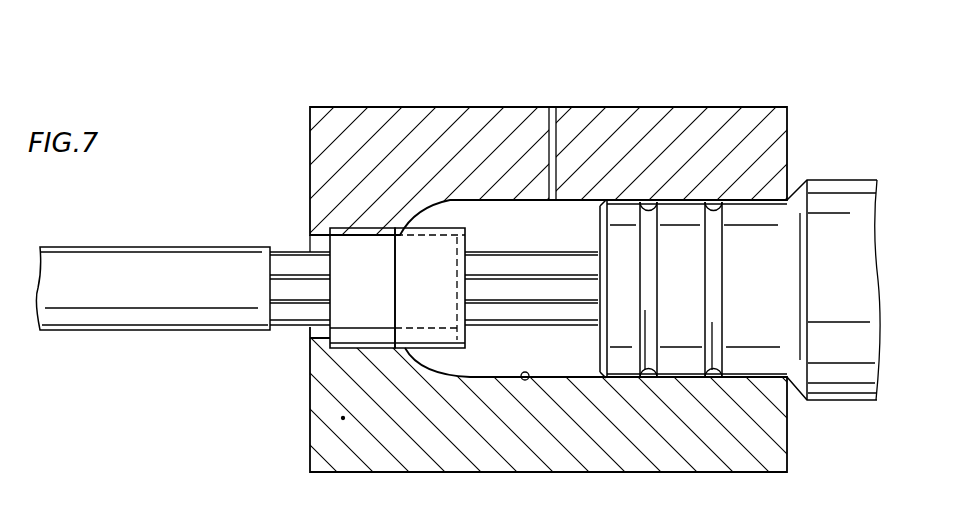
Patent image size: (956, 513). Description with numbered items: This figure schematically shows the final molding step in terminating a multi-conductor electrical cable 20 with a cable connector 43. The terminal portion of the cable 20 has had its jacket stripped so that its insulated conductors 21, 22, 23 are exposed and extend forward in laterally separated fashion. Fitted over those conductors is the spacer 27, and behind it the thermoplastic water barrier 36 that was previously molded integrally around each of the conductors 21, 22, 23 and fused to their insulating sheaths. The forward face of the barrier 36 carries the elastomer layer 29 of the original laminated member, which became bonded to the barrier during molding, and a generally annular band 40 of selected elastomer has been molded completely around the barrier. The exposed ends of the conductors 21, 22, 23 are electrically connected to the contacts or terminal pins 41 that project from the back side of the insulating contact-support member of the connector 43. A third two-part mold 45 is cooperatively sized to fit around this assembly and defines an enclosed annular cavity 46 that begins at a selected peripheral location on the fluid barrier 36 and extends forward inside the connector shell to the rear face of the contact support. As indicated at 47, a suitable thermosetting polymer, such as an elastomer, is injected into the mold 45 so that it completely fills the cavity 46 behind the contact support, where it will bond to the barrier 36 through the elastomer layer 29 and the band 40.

The multi-conductor electrical cable 20 is at (231, 247).
The electrical conductor 21 is at (577, 313).
The electrical conductor 22 is at (548, 290).
The electrical conductor 23 is at (547, 223).
The spacer 27 is at (367, 293).
The forward elastomer layer 29 is at (463, 334).
The water barrier 36 is at (433, 293).
The annular band 40 is at (445, 237).
The terminal pin 41 is at (764, 294).
The cable connector 43 is at (835, 168).
The third two-part mold 45 is at (418, 455).
The annular cavity 46 is at (530, 383).
The injection of thermosetting polymer 47 is at (552, 100).